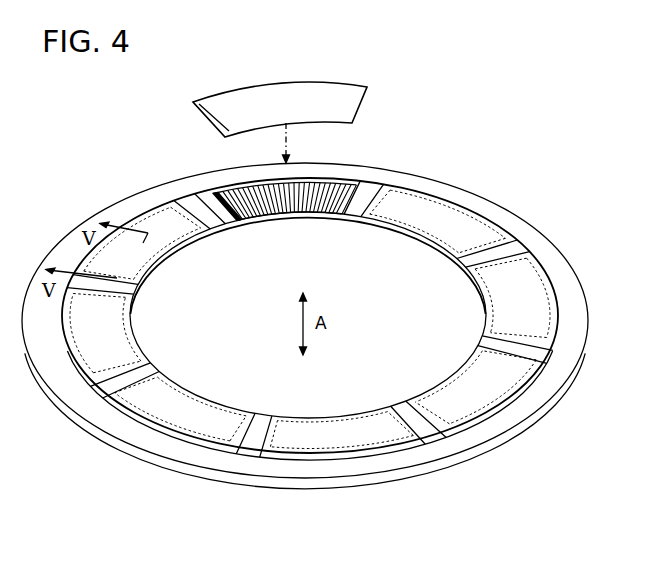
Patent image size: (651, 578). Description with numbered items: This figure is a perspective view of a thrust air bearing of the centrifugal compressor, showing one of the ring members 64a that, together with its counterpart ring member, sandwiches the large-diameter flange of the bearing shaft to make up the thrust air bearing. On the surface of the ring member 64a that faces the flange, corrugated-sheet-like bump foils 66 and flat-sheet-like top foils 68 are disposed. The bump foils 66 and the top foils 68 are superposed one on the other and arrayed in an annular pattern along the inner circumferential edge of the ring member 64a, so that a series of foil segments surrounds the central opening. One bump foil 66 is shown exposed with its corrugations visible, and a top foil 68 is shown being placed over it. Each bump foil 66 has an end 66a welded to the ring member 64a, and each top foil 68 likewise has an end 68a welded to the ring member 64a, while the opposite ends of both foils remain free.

The ring member 64a is at (466, 447).
The bump foil 66 is at (263, 218).
The end of bump foil 66a is at (220, 220).
The top foil 68 is at (303, 96).
The end of top foil 68a is at (222, 134).